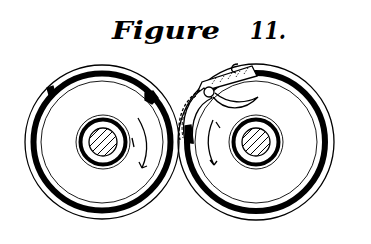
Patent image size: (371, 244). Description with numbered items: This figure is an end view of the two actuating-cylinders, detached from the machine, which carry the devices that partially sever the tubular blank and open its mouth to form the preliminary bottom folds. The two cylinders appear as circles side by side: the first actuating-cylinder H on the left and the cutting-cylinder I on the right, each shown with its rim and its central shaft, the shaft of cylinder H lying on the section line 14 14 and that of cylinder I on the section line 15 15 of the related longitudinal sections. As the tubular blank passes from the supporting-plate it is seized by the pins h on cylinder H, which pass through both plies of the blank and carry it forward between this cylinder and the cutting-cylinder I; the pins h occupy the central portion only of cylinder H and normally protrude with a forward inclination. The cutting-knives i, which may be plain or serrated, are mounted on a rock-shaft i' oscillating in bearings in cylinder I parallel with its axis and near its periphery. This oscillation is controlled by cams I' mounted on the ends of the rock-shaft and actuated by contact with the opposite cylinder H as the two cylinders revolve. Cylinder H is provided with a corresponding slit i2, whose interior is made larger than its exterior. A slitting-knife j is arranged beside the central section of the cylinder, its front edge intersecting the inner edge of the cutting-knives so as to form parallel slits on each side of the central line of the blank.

The section line of the first actuating-cylinder 14 is at (138, 78).
The section line of the other actuating-cylinder 15 is at (218, 77).
The first actuating-cylinder H is at (102, 142).
The cutting-cylinder I is at (256, 142).
The cams I' is at (256, 130).
The perforating-pins h is at (127, 84).
The cutting-knives i is at (196, 104).
The rock-shaft of the cutting-knives i' is at (235, 104).
The slit i2 is at (115, 128).
The slitting-knife j is at (238, 60).